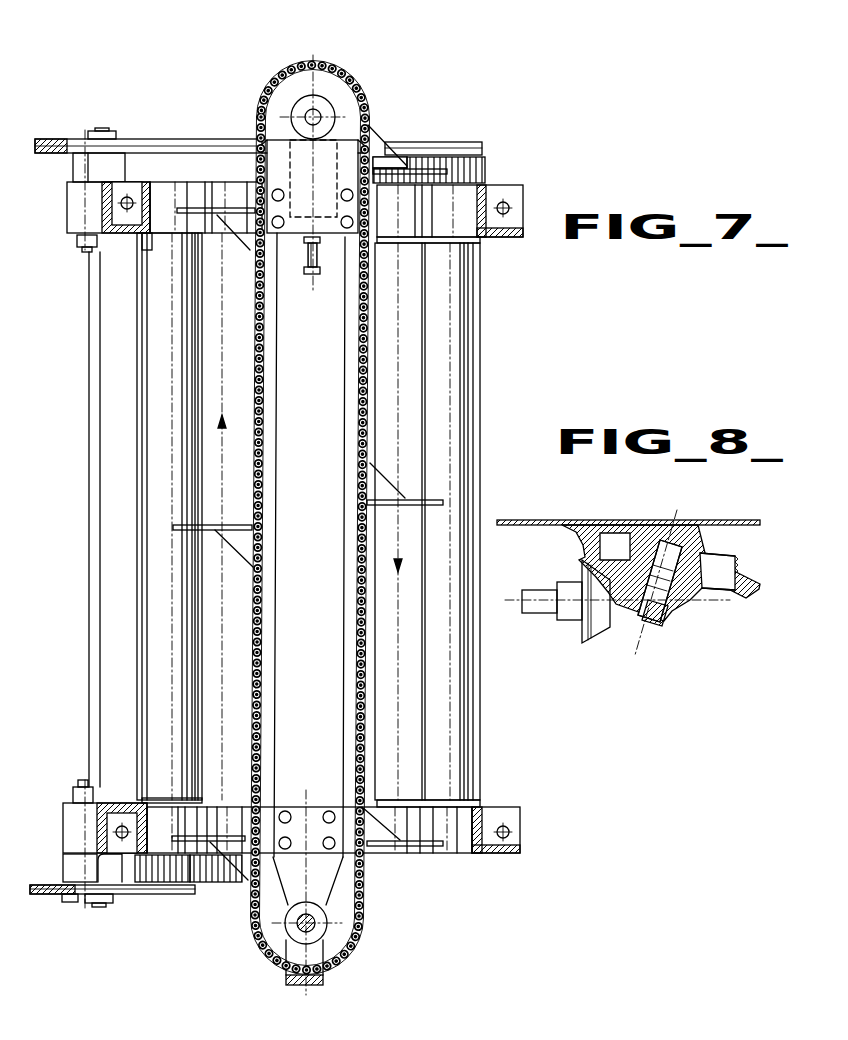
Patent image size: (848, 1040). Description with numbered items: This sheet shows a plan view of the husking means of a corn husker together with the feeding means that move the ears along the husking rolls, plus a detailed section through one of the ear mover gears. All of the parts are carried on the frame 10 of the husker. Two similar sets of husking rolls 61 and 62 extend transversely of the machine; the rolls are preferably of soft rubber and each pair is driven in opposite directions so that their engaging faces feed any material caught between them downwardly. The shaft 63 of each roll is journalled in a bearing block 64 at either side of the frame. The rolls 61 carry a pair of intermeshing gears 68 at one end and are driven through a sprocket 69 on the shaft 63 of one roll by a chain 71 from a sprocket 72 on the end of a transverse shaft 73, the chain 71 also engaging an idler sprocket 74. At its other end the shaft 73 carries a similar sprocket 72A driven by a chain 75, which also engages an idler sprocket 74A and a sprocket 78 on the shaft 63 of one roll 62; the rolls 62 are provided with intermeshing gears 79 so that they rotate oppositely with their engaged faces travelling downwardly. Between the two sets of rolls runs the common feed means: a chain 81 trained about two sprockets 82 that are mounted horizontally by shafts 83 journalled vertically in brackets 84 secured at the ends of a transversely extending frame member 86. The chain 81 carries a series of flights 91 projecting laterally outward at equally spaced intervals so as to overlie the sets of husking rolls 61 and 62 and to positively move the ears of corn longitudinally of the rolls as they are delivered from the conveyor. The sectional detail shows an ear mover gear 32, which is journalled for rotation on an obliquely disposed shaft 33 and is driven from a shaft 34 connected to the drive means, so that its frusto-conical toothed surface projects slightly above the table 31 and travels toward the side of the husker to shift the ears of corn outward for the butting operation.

In FIG. 7, the frame 10 is at (478, 854).
In FIG. 7, the husking rolls 61 is at (210, 652).
In FIG. 7, the husking rolls 62 is at (410, 357).
In FIG. 7, the shaft 63 is at (413, 243).
In FIG. 7, the bearing blocks 64 is at (203, 196).
In FIG. 7, the intermeshing gears 68 is at (210, 884).
In FIG. 7, the sprocket 69 is at (158, 884).
In FIG. 7, the chain 71 is at (108, 903).
In FIG. 7, the sprocket 72 is at (118, 894).
In FIG. 7, the sprocket 72A is at (126, 139).
In FIG. 7, the transverse shaft 73 is at (93, 424).
In FIG. 7, the idler sprocket 74 is at (70, 902).
In FIG. 7, the idler sprocket 74A is at (108, 124).
In FIG. 7, the chain 75 is at (151, 139).
In FIG. 7, the sprocket 78 is at (446, 160).
In FIG. 7, the intermeshing gears 79 is at (486, 172).
In FIG. 7, the chain 81 is at (360, 398).
In FIG. 7, the sprockets 82 is at (345, 94).
In FIG. 7, the shafts 83 is at (312, 117).
In FIG. 7, the brackets 84 is at (291, 130).
In FIG. 7, the frame member 86 is at (345, 318).
In FIG. 7, the flights 91 is at (398, 150).
In FIG. 8, the frame plate or table 31 is at (538, 520).
In FIG. 8, the ear mover gear 32 is at (708, 568).
In FIG. 8, the shaft 33 is at (650, 612).
In FIG. 8, the shaft 34 is at (549, 608).